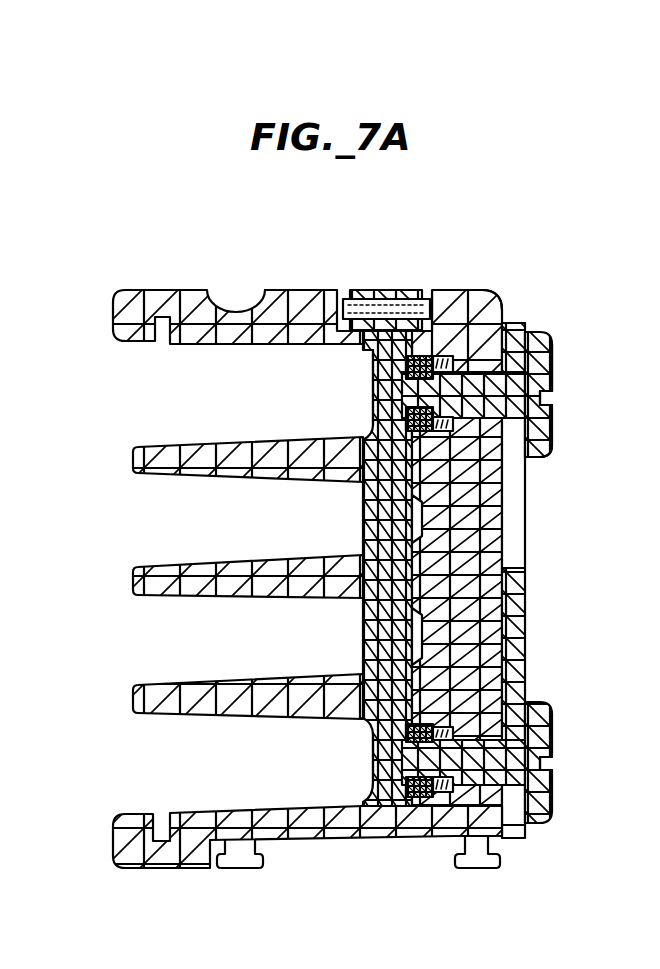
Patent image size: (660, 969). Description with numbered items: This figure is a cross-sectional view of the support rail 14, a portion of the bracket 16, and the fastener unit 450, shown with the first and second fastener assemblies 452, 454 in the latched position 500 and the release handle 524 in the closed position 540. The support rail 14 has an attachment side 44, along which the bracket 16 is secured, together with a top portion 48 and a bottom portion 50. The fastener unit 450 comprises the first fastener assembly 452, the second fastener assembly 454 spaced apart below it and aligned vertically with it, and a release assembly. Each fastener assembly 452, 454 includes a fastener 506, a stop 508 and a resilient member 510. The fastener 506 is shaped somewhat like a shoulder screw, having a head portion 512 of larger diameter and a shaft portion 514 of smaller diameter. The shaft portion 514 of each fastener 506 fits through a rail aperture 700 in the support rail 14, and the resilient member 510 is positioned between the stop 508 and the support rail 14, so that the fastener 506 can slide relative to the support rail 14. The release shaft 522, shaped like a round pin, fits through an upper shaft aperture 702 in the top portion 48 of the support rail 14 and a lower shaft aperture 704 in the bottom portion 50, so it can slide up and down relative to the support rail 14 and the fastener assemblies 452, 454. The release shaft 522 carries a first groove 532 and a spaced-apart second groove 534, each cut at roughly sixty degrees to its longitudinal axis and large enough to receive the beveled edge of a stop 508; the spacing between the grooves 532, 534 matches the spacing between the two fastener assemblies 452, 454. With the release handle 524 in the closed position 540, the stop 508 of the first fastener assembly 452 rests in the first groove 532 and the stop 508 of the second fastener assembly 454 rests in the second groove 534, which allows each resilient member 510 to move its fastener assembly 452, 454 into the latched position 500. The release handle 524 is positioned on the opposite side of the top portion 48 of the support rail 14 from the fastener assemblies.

The support rail 14 is at (182, 298).
The top portion 48 is at (288, 298).
The release handle 524 is at (358, 288).
The fastener unit 450 is at (388, 282).
The closed position 540 is at (492, 284).
The attachment side 44 is at (521, 318).
The bracket 16 is at (523, 320).
The head portion 512 is at (558, 343).
The first fastener assembly 452 is at (553, 377).
The latched position 500 is at (575, 400).
The fastener 506 is at (555, 432).
The shaft portion 514 is at (527, 468).
The rail aperture 700 is at (440, 431).
The resilient member 510 is at (512, 493).
The stop 508 is at (452, 440).
The upper shaft aperture 702 is at (404, 366).
The first groove 532 is at (368, 405).
The release shaft 522 is at (365, 523).
The second groove 534 is at (372, 758).
The bottom portion 50 is at (283, 808).
The lower shaft aperture 704 is at (375, 810).
The second fastener assembly 454 is at (560, 715).